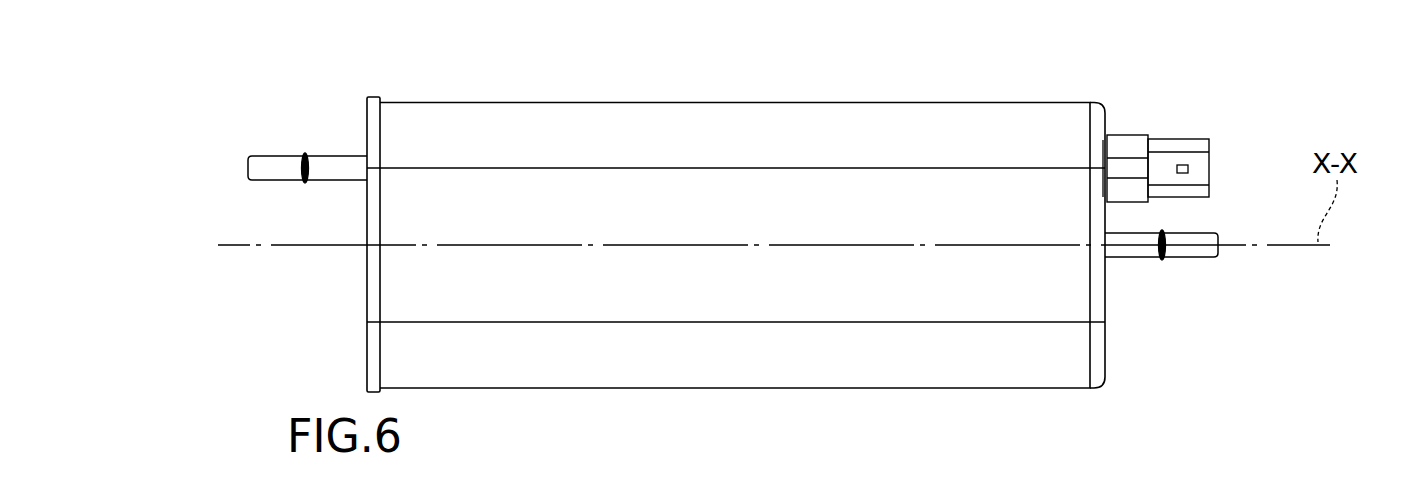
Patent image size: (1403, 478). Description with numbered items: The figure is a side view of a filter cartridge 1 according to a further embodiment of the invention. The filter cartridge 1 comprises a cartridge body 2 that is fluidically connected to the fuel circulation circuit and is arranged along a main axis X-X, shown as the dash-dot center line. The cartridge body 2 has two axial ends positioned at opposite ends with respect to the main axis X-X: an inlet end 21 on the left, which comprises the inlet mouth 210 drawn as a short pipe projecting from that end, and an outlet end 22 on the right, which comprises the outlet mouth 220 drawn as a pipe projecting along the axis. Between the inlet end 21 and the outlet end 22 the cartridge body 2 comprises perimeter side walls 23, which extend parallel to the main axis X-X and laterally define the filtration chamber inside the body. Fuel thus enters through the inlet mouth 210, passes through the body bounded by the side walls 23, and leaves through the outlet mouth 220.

The filter cartridge 1 is at (714, 238).
The cartridge body 2 is at (736, 200).
The inlet end 21 is at (364, 114).
The outlet end 22 is at (1112, 108).
The perimeter side walls 23 is at (703, 146).
The inlet mouth 210 is at (331, 164).
The outlet mouth 220 is at (1143, 252).